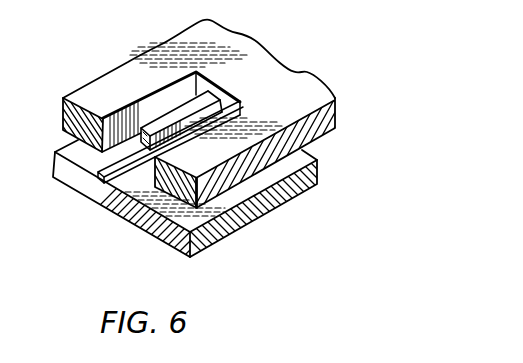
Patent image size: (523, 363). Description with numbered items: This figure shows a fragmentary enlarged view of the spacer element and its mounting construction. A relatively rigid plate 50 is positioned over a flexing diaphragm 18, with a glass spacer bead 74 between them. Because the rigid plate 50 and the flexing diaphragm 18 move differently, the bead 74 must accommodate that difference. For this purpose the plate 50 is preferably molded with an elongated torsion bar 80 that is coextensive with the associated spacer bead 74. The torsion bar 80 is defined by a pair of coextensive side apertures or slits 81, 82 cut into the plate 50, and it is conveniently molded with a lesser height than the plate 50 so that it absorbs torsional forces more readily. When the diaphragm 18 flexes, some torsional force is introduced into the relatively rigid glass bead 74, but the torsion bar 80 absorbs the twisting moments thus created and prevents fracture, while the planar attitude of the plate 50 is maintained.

The diaphragm 18 is at (265, 207).
The plate 50 is at (323, 128).
The spacer bead 74 is at (104, 182).
The torsion bar 80 is at (207, 97).
The side aperture 81 is at (152, 110).
The side aperture 82 is at (242, 100).